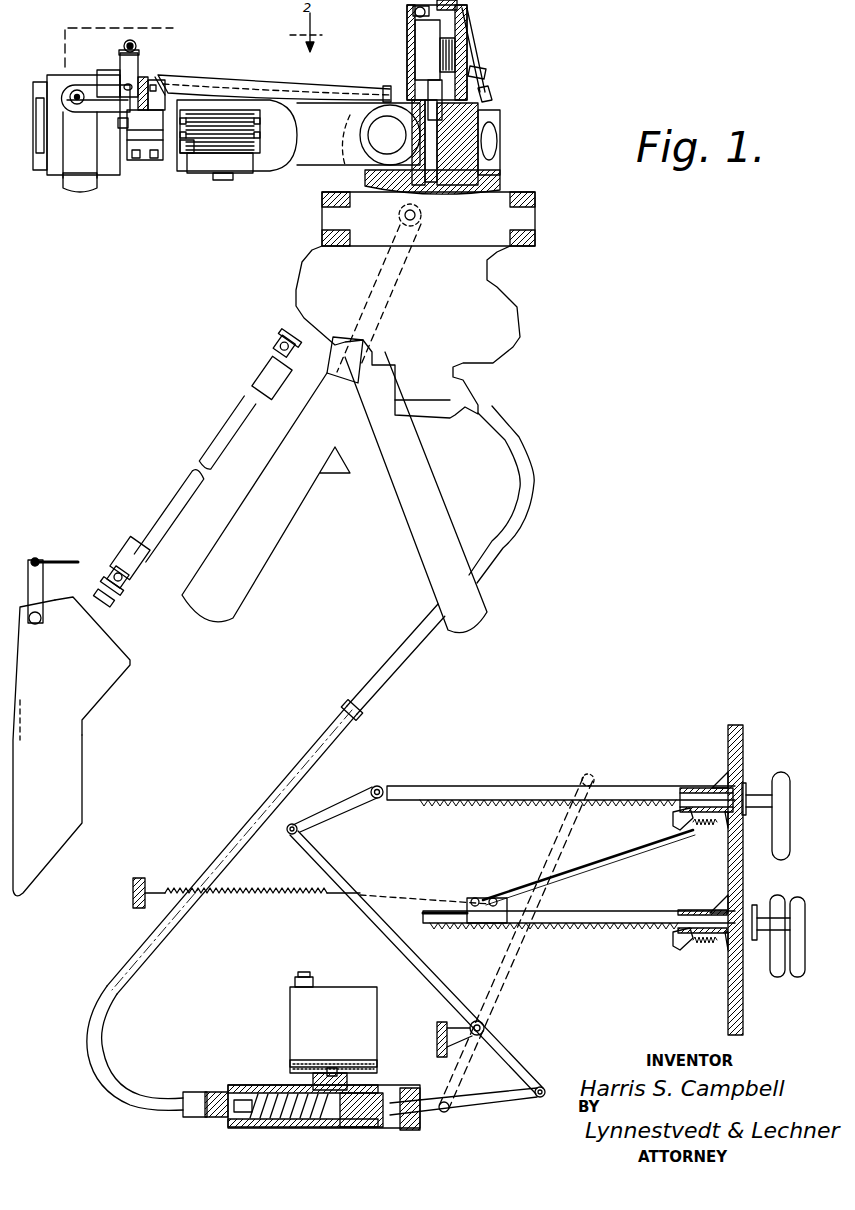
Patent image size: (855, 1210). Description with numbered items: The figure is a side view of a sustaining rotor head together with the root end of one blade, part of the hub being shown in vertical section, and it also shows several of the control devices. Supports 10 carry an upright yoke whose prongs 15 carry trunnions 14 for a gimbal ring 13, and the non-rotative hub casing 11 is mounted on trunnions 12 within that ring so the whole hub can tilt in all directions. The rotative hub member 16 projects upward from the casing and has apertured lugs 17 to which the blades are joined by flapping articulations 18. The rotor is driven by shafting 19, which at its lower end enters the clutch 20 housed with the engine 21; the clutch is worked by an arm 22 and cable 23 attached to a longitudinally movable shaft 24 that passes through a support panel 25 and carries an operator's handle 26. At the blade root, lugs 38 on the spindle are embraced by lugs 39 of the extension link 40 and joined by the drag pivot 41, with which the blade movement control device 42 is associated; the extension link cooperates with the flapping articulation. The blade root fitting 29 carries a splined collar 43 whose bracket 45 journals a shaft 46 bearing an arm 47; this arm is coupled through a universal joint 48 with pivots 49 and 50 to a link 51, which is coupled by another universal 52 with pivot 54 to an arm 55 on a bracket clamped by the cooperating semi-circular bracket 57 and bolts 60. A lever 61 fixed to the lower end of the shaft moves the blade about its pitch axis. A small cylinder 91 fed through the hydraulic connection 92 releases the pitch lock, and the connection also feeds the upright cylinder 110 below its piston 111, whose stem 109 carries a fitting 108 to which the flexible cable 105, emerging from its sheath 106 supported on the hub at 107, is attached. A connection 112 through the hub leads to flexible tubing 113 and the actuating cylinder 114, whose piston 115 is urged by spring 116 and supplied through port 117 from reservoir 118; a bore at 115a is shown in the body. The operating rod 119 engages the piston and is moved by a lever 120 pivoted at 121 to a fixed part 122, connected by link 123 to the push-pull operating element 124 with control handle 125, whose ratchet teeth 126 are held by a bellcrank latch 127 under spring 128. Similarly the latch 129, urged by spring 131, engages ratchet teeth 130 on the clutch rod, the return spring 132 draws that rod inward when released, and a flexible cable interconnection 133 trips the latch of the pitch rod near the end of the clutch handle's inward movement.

The supports 10 is at (413, 517).
The non-rotative hub casing 11 is at (415, 305).
The trunnions 12 is at (320, 235).
The gimbal ring 13 is at (535, 200).
The trunnions 14 is at (421, 213).
The prongs 15 is at (407, 272).
The rotative hub member 16 is at (460, 128).
The apertured lugs 17 is at (357, 153).
The flapping articulation 18 is at (370, 128).
The shafting 19 is at (228, 418).
The clutch 20 is at (117, 655).
The engine 21 is at (60, 787).
The arm 22 is at (40, 582).
The cable 23 is at (67, 560).
The longitudinally movable shaft 24 is at (610, 913).
The support panel 25 is at (733, 868).
The operator's handle 26 is at (792, 977).
The blade root fitting 29 is at (38, 173).
The apertured lugs 38 is at (190, 110).
The apertured lugs 39 is at (237, 95).
The extension link 40 is at (358, 134).
The pivot 41 is at (220, 180).
The blade movement control device 42 is at (192, 143).
The collar 43 is at (72, 77).
The bracket 45 is at (93, 163).
The shaft 46 is at (78, 88).
The arm 47 is at (103, 93).
The universal joint 48 is at (128, 117).
The pivot 49 is at (140, 82).
The pivot 50 is at (124, 87).
The link 51 is at (135, 67).
The universal joint 52 is at (140, 52).
The pivot 54 is at (136, 45).
The arm 55 is at (155, 98).
The semi-circular bracket 57 is at (138, 148).
The bolt 60 is at (135, 167).
The lever 61 is at (75, 190).
The cylinder 91 is at (160, 72).
The hydraulic connection 92 is at (317, 93).
The flexible cable 105 is at (475, 33).
The flexible sheath 106 is at (485, 88).
The sheath support 107 is at (473, 65).
The fitting 108 is at (472, 6).
The piston stem 109 is at (408, 18).
The upright cylinder 110 is at (410, 38).
The piston 111 is at (423, 55).
The connection 112 is at (430, 157).
The flexible tubing 113 is at (523, 463).
The actuating cylinder 114 is at (247, 1087).
The piston 115 is at (363, 1127).
The bore 115a is at (435, 400).
The spring 116 is at (273, 1127).
The port 117 is at (317, 1087).
The reservoir 118 is at (303, 1003).
The operating rod 119 is at (463, 1107).
The lever 120 is at (500, 1050).
The pivot 121 is at (493, 1027).
The fixed part 122 is at (435, 1033).
The link 123 is at (340, 813).
The push-pull operating element 124 is at (488, 785).
The control handle 125 is at (780, 780).
The ratchet teeth 126 is at (510, 810).
The bellcrank latch 127 is at (677, 818).
The spring 128 is at (713, 832).
The bellcrank latch 129 is at (685, 950).
The ratchet teeth 130 is at (630, 933).
The spring 131 is at (715, 940).
The return spring 132 is at (277, 893).
The flexible cable interconnection 133 is at (593, 873).